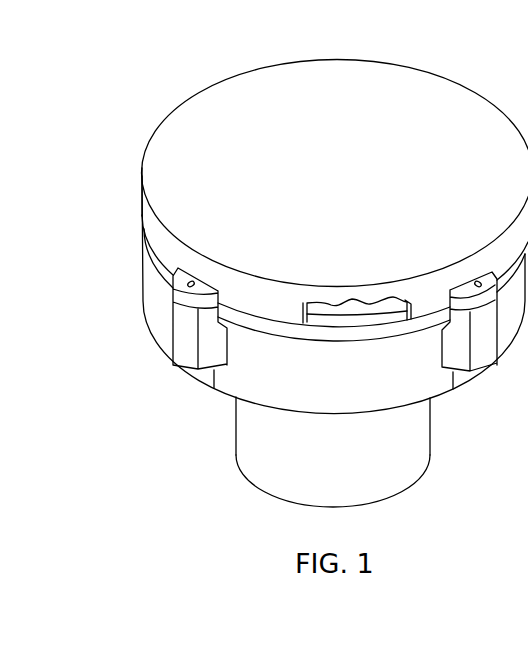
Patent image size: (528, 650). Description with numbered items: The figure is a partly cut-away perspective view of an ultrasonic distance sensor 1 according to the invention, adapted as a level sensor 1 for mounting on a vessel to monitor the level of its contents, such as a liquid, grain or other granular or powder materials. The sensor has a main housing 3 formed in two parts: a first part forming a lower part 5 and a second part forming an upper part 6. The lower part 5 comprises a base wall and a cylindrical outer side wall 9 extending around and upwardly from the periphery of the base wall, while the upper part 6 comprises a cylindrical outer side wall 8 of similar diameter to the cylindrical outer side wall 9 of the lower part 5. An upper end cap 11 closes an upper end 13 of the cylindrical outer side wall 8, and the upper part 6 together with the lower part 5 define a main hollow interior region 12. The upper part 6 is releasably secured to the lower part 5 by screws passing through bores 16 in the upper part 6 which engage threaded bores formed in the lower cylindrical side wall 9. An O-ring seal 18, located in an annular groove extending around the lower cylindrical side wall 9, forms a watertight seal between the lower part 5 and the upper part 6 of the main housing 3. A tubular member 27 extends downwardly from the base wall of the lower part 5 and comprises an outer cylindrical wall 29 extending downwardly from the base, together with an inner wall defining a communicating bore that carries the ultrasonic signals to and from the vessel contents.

The ultrasonic distance sensor 1 is at (202, 466).
The main housing 3 is at (233, 384).
The lower part 5 is at (432, 380).
The upper part 6 is at (140, 198).
The cylindrical outer side wall 8 is at (150, 216).
The cylindrical outer side wall 9 is at (164, 319).
The upper end cap 11 is at (482, 126).
The main hollow interior region 12 is at (335, 313).
The upper end 13 is at (141, 158).
The bores 16 is at (192, 281).
The O-ring seal 18 is at (372, 325).
The tubular member 27 is at (410, 450).
The outer cylindrical wall 29 is at (383, 483).